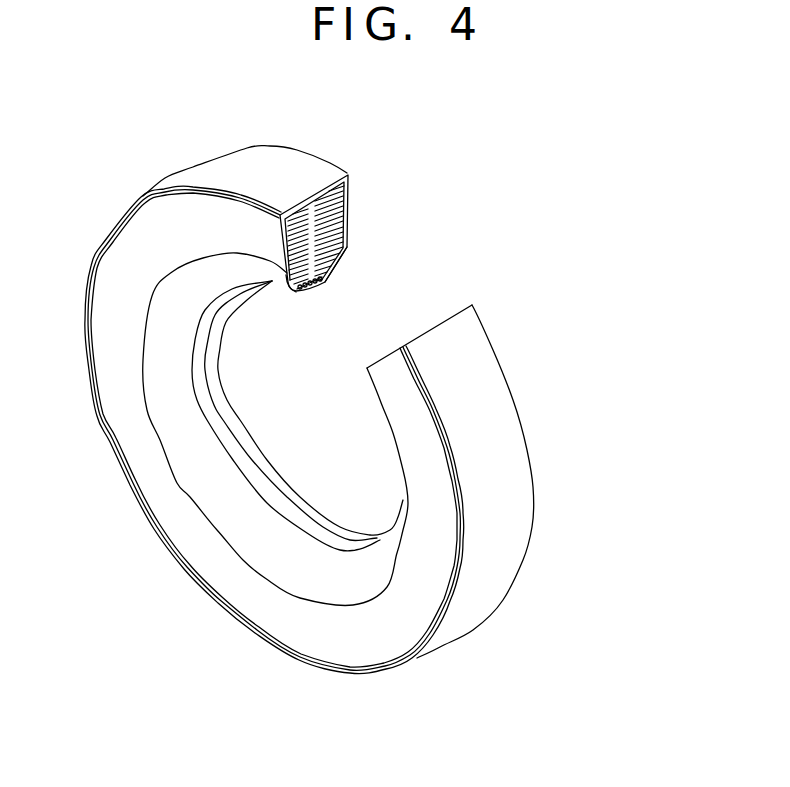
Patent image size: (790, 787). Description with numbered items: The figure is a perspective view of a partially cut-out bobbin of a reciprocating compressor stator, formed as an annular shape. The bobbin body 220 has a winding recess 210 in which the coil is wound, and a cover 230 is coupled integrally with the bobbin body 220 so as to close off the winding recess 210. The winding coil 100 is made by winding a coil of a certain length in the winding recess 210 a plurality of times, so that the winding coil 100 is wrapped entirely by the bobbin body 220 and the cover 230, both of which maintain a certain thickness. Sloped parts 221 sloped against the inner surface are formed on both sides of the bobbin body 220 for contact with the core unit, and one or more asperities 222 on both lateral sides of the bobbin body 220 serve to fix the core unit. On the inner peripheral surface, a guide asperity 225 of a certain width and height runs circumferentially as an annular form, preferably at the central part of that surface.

The winding coil 100 is at (306, 294).
The winding recess 210 is at (348, 202).
The bobbin body 220 is at (358, 183).
The sloped part 221 is at (341, 257).
The asperity 222 is at (232, 197).
The guide asperity 225 is at (240, 449).
The cover 230 is at (310, 166).